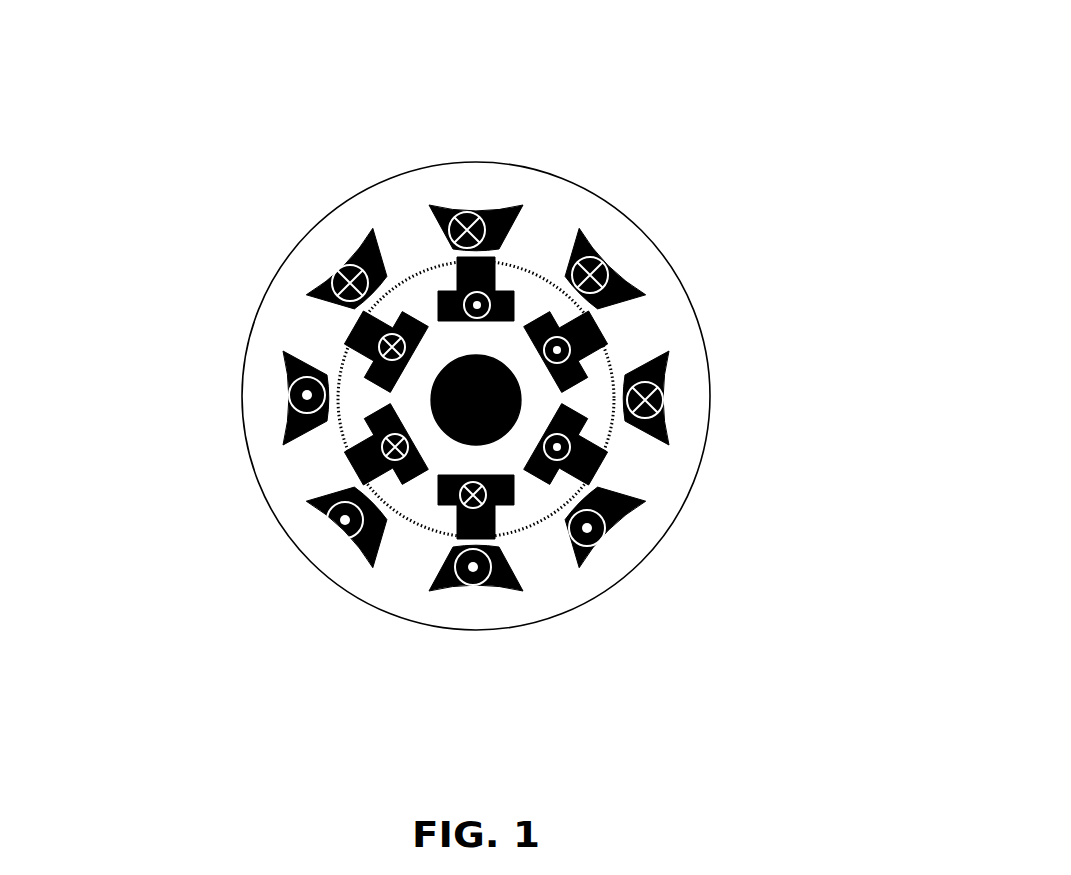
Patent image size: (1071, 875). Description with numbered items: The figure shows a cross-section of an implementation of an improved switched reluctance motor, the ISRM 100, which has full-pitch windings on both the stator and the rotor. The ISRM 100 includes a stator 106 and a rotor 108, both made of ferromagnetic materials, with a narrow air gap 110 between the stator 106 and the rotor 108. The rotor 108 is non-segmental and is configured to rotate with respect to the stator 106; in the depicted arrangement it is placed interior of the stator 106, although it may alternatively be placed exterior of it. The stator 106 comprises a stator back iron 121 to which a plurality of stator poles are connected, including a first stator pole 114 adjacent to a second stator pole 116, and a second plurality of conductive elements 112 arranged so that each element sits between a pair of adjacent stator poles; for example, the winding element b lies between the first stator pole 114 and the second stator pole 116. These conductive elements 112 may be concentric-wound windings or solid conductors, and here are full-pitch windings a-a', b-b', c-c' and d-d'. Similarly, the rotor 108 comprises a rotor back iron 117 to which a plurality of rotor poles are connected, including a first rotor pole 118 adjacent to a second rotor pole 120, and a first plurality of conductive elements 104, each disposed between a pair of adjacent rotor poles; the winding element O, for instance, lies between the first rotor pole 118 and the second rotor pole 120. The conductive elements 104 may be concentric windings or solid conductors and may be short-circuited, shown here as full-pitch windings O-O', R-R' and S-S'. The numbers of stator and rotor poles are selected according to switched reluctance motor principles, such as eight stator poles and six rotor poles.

The ISRM 100 is at (716, 87).
The first plurality of conductive elements 104 is at (416, 441).
The stator 106 is at (323, 215).
The rotor 108 is at (437, 325).
The narrow air gap 110 is at (339, 355).
The second plurality of conductive elements 112 is at (277, 395).
The first stator pole 114 is at (618, 327).
The second stator pole 116 is at (548, 262).
The rotor back iron 117 is at (422, 377).
The first rotor pole 118 is at (603, 374).
The second rotor pole 120 is at (510, 277).
The stator back iron 121 is at (303, 538).